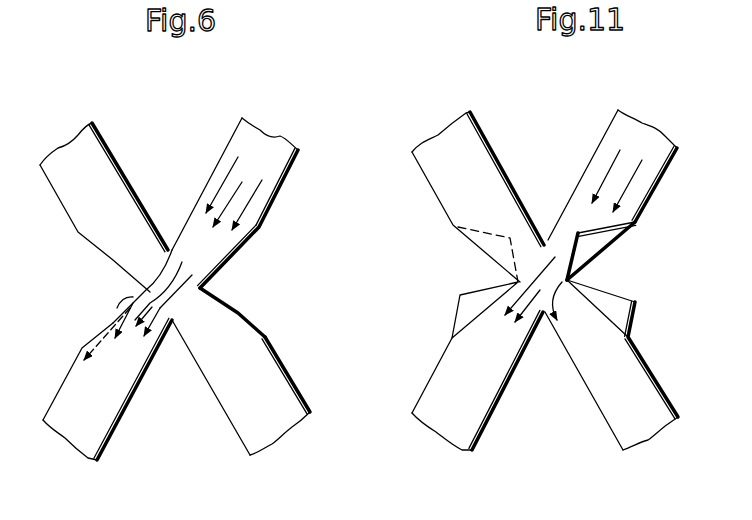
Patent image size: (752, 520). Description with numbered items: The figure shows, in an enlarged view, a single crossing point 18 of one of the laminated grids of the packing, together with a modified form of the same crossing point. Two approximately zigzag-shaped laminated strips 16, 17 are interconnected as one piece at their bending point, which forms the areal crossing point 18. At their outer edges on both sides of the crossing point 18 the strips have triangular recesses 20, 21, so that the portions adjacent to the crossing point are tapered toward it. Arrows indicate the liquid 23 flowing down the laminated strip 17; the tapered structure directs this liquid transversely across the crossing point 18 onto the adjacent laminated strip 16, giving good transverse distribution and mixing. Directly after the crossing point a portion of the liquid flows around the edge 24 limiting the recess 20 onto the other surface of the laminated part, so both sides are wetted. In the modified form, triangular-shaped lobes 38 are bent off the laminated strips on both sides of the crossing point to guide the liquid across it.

In FIG. 6, the laminated strip 16 is at (70, 160).
In FIG. 6, the laminated strip 17 is at (263, 147).
In FIG. 6, the crossing point 18 is at (186, 328).
In FIG. 6, the triangular recess 20 is at (130, 292).
In FIG. 6, the triangular recess 21 is at (218, 285).
In FIG. 6, the liquid 23 is at (252, 200).
In FIG. 6, the edge 24 is at (112, 328).
In FIG. 11, the triangular-shaped lobe 38 is at (598, 245).